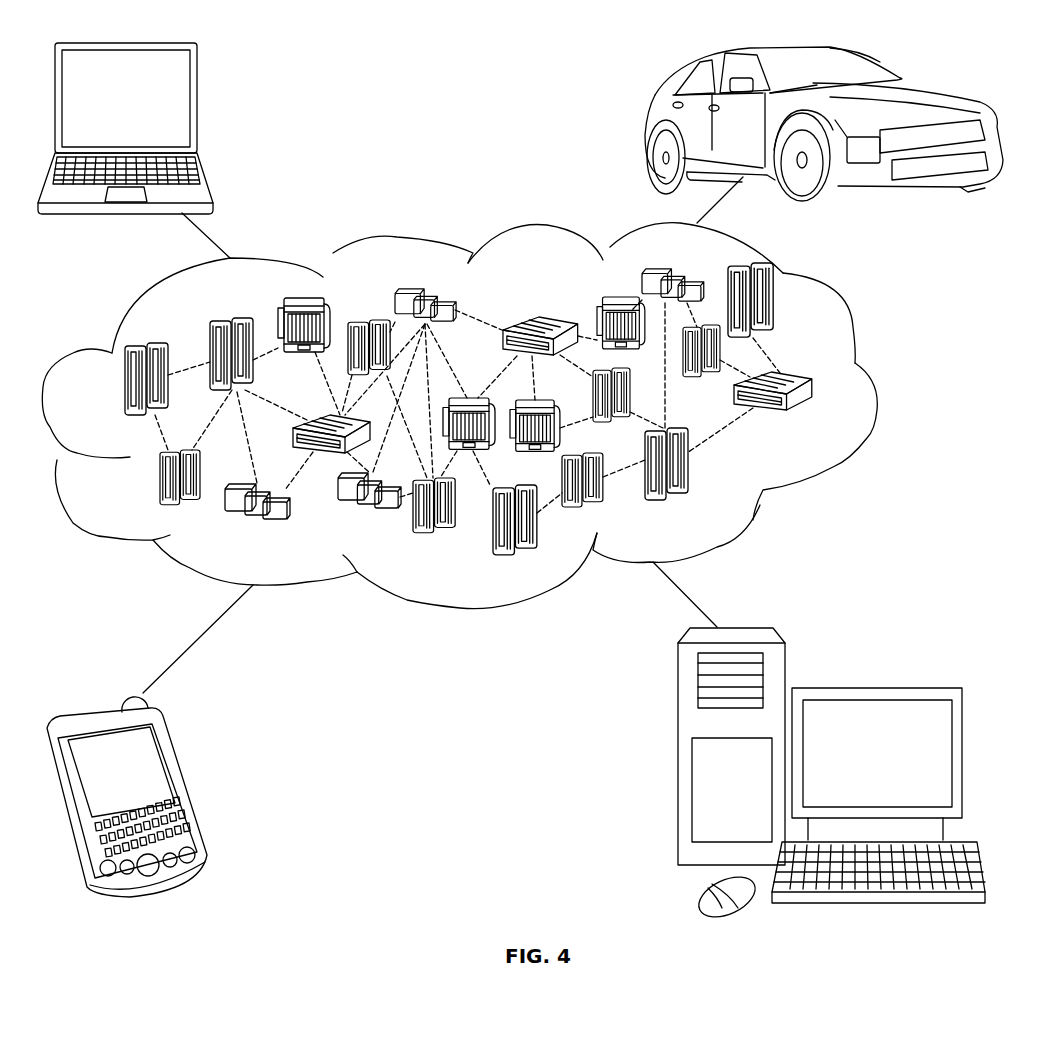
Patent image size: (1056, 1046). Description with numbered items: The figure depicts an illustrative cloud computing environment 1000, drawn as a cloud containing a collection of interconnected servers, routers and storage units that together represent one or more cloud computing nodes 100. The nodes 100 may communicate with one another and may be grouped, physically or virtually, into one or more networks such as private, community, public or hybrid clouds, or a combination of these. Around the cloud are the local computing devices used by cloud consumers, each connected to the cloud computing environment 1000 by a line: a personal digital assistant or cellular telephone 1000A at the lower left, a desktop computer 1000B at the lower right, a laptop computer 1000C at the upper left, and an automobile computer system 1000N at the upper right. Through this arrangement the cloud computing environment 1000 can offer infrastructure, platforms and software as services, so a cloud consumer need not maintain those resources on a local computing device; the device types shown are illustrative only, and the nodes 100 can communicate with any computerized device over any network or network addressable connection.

The laptop computer 1000C is at (197, 107).
The automobile computer system 1000N is at (650, 103).
The cloud computing environment 1000 is at (875, 390).
The cloud computing nodes 100 is at (813, 420).
The personal digital assistant (PDA) or cellular telephone 1000A is at (183, 783).
The desktop computer 1000B is at (873, 682).